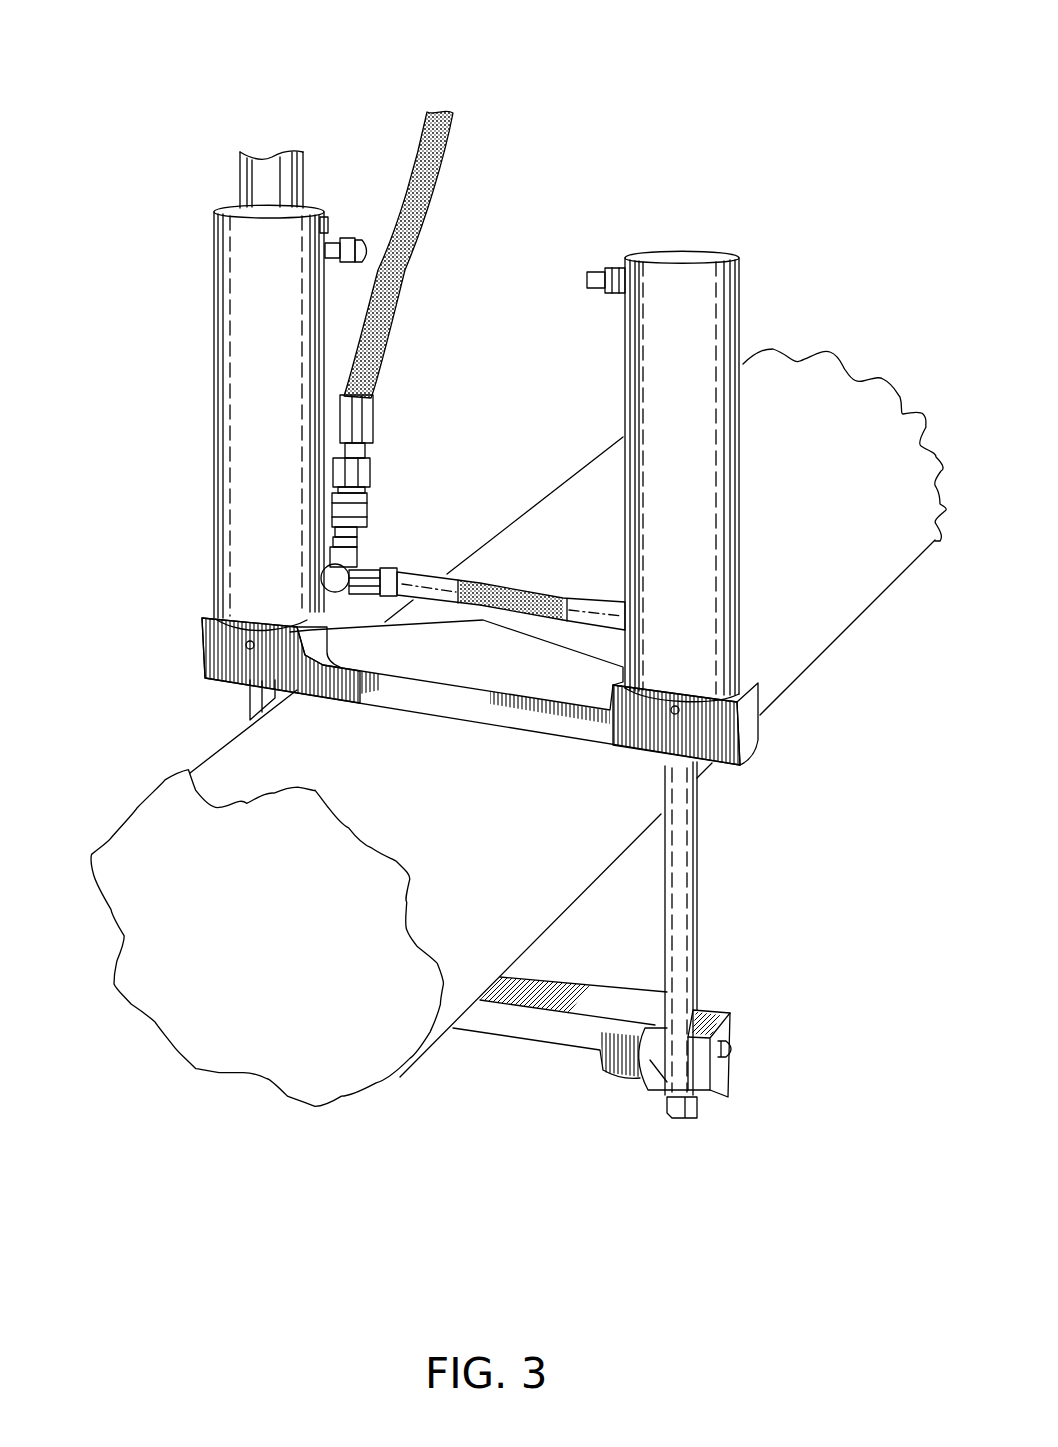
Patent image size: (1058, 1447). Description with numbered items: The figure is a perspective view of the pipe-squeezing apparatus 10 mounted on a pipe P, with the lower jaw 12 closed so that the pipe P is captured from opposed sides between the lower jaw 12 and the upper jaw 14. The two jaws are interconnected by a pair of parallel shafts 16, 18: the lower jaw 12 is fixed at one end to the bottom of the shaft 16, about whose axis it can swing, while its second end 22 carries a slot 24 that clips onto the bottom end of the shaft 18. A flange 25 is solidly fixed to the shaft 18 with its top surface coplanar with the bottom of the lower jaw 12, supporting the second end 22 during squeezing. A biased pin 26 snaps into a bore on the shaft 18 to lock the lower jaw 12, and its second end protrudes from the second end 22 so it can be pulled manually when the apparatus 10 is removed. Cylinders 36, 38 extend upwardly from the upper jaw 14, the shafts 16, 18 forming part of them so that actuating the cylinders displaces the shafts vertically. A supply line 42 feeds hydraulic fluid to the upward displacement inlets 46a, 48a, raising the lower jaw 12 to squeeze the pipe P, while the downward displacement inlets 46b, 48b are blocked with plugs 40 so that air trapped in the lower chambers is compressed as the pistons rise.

The pipe-squeezing apparatus 10 is at (885, 853).
The lower jaw 12 is at (526, 1066).
The upper jaw 14 is at (747, 723).
The shaft 16 is at (263, 172).
The shaft 18 is at (690, 880).
The second end 22 is at (718, 1010).
The slot 24 is at (667, 1097).
The flange 25 is at (693, 1118).
The pin 26 is at (735, 1050).
The cylinder 36 is at (237, 470).
The cylinder 38 is at (713, 345).
The plug 40 is at (587, 282).
The supply line 42 is at (378, 337).
The upward displacement inlet 46a is at (317, 580).
The downward displacement inlet 46b is at (326, 234).
The upward displacement inlet 48a is at (508, 578).
The downward displacement inlet 48b is at (620, 262).
The pipe P is at (827, 606).